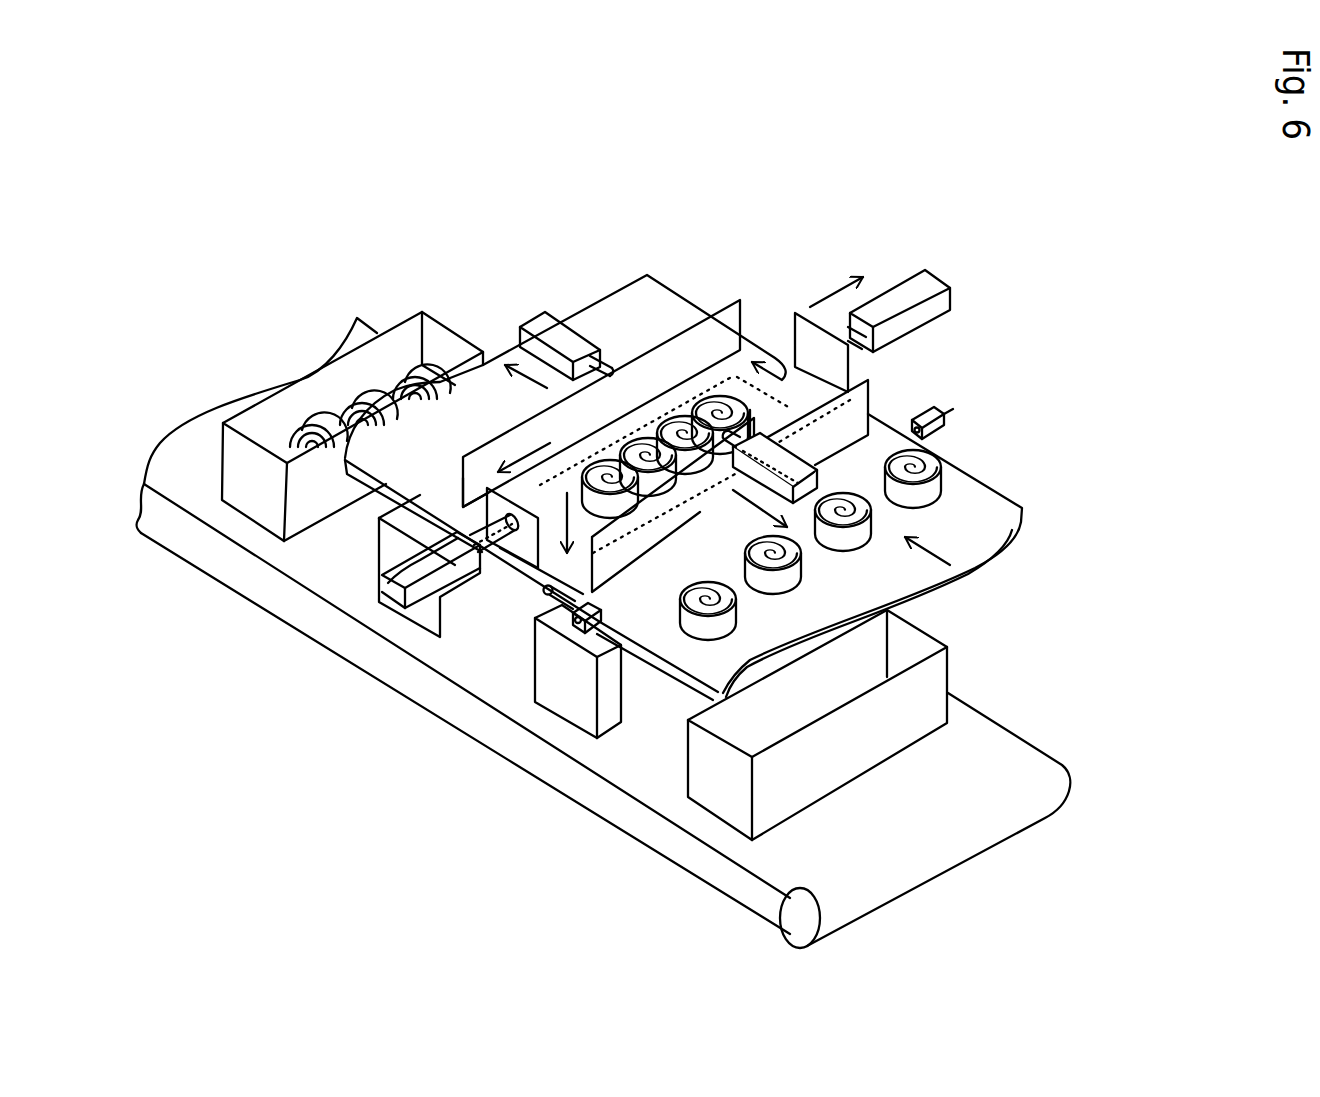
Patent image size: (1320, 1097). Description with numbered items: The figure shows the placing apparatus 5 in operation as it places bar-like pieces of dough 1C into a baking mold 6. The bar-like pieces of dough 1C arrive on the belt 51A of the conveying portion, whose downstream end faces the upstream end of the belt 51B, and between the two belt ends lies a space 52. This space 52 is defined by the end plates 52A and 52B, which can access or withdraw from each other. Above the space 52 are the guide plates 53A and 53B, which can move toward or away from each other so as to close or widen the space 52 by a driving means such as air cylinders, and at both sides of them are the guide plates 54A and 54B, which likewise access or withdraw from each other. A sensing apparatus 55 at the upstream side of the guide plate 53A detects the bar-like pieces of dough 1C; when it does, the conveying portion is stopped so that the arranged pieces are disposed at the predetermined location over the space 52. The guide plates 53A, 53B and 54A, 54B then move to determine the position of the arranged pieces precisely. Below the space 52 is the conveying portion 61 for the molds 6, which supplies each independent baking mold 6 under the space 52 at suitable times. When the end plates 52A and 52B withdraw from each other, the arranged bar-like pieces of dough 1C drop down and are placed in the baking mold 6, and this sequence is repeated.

The bar-like pieces of dough 1C is at (702, 408).
The placing apparatus 5 is at (613, 293).
The baking mold 6 is at (868, 728).
The conveying portion for molds 61 is at (997, 735).
The belt 51A is at (957, 477).
The belt 51B is at (603, 333).
The space 52 is at (520, 575).
The end plate 52A is at (545, 578).
The end plate 52B is at (417, 527).
The guide plate 53A is at (652, 538).
The guide plate 53B is at (728, 297).
The guide plate 54A is at (379, 527).
The guide plate 54B is at (797, 312).
The sensing apparatus 55 is at (928, 405).